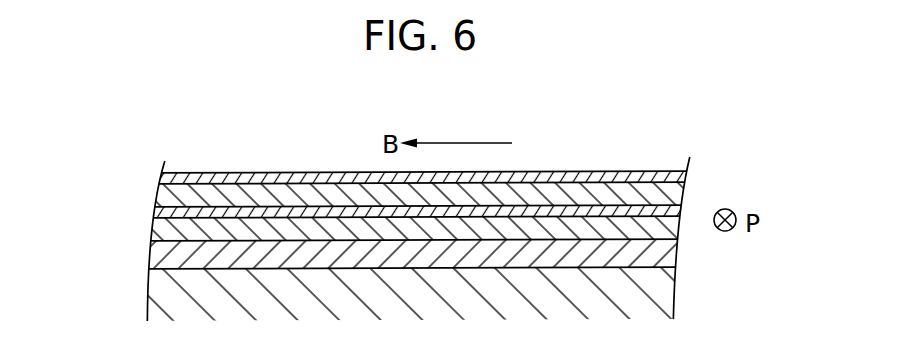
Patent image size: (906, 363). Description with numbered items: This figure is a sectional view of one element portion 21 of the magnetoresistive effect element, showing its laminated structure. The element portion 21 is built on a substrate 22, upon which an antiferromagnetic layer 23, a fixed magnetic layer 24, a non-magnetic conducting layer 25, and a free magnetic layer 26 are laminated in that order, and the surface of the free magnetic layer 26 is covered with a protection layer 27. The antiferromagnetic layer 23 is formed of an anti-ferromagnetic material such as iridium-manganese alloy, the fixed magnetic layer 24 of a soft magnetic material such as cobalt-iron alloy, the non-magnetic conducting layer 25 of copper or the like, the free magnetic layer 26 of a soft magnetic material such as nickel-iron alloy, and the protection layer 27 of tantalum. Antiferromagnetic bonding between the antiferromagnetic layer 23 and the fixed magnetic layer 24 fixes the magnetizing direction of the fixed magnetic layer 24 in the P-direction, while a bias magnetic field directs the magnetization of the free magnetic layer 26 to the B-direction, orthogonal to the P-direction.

The element portion 21 is at (389, 202).
The substrate 22 is at (165, 295).
The antiferromagnetic layer 23 is at (165, 257).
The fixed magnetic layer 24 is at (163, 228).
The non-magnetic conducting layer 25 is at (162, 210).
The free magnetic layer 26 is at (158, 197).
The protection layer 27 is at (165, 176).